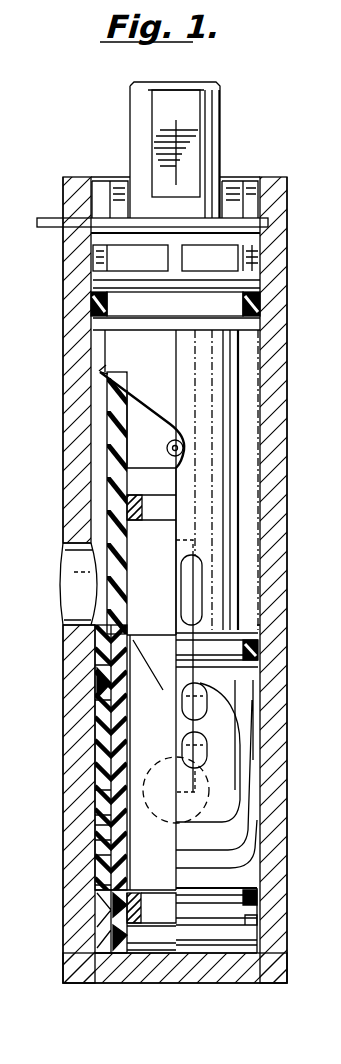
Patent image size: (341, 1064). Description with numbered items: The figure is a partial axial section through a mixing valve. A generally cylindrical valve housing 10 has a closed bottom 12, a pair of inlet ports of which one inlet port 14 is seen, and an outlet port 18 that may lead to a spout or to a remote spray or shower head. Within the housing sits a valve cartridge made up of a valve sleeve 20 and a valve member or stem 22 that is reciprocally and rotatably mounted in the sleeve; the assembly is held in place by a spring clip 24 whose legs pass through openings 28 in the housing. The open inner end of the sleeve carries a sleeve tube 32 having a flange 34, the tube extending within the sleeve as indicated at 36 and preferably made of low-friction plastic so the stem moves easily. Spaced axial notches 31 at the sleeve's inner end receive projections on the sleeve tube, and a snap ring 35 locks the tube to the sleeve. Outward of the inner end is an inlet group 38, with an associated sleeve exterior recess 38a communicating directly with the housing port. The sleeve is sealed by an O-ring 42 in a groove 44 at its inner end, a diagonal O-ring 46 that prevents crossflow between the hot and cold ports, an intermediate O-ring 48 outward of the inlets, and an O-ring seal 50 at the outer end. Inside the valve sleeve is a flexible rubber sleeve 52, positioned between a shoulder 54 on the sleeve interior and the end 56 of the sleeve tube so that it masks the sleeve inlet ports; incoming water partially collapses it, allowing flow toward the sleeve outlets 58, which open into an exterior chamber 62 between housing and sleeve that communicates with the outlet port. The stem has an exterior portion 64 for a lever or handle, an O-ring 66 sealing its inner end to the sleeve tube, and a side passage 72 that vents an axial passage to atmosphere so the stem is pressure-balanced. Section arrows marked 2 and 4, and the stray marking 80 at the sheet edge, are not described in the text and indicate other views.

The section line 2- 2 is at (145, 58).
The section line 4 is at (340, 798).
The valve housing 10 is at (285, 412).
The closed bottom 12 is at (248, 970).
The inlet port 14 is at (331, 737).
The outlet port 18 is at (80, 578).
The valve sleeve 20 is at (232, 382).
The valve member or stem 22 is at (218, 140).
The spring clip 24 is at (50, 217).
The openings 28 is at (284, 230).
The axial notches 31 is at (105, 822).
The sleeve tube 32 is at (120, 945).
The flange 34 is at (258, 920).
The snap ring 35 is at (105, 862).
The sleeve tube extension 36 is at (105, 808).
The inlet group 38 is at (202, 690).
The sleeve exterior recess 38a is at (222, 740).
The O-ring 42 is at (262, 893).
The groove 44 is at (262, 905).
The diagonal O-ring 46 is at (105, 770).
The intermediate O-ring 48 is at (262, 648).
The O-ring seal 50 is at (262, 302).
The flexible sleeve 52 is at (131, 688).
The shoulder 54 is at (140, 634).
The end of sleeve tube 56 is at (130, 775).
The sleeve outlets 58 is at (200, 568).
The exterior chamber 62 is at (103, 373).
The exterior portion 64 is at (190, 122).
The O-ring 66 is at (299, 934).
The side passage 72 is at (178, 440).
The element 80 is at (332, 673).